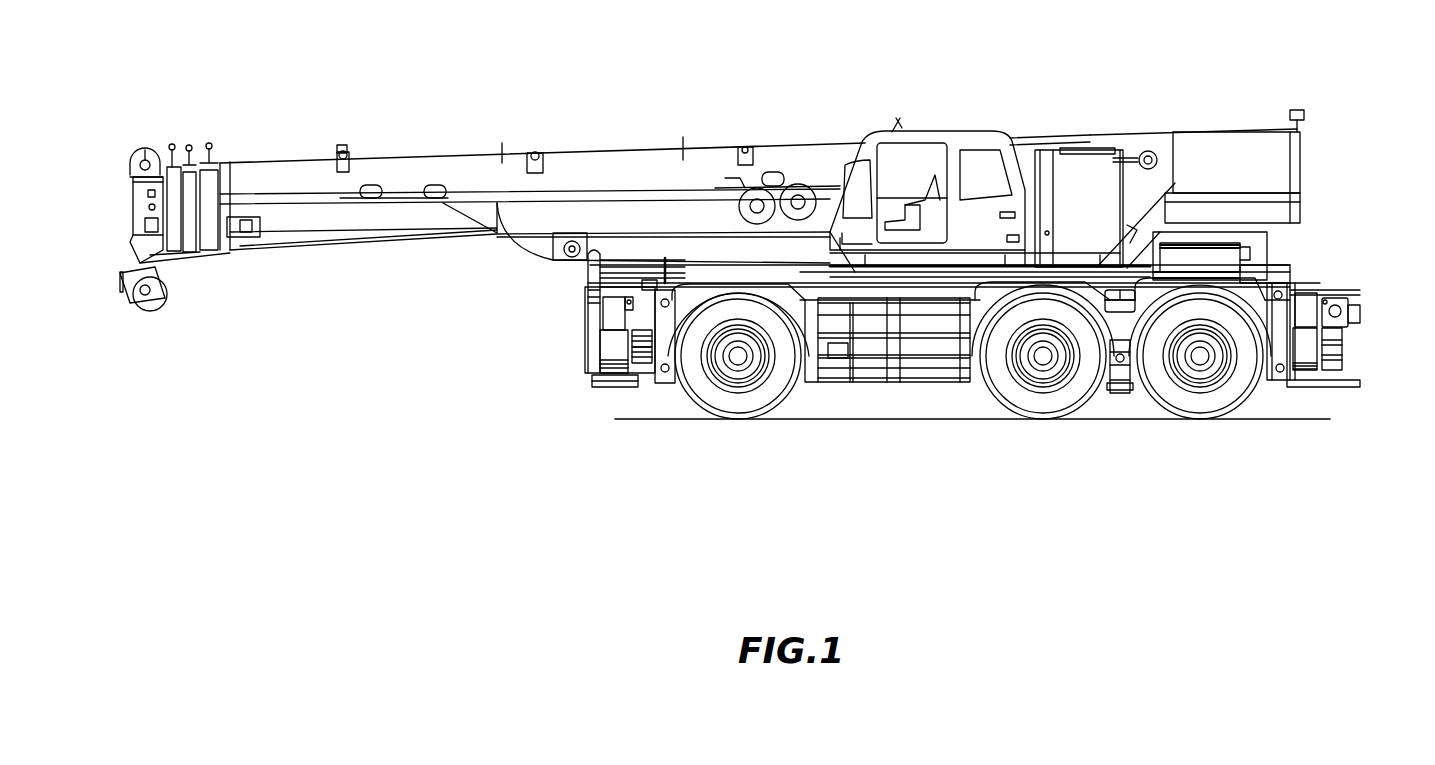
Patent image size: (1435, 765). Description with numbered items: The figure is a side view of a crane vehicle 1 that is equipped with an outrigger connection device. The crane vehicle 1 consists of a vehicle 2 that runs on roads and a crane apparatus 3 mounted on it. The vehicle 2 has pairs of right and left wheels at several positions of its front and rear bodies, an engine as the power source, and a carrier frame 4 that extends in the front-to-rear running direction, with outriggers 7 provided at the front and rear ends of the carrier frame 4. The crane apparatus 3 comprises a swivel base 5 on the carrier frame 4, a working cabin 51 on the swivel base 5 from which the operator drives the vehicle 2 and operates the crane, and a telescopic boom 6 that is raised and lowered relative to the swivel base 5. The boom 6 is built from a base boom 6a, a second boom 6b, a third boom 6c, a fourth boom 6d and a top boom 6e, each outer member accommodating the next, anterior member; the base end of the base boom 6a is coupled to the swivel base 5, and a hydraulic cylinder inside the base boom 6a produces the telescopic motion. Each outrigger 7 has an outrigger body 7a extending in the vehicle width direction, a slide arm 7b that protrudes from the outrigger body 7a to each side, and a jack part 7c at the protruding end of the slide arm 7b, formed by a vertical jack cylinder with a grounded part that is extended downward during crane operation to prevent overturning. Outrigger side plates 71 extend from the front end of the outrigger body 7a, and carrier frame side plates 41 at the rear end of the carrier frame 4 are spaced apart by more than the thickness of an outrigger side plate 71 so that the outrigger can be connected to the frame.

The crane vehicle 1 is at (718, 74).
The vehicle 2 is at (912, 398).
The crane apparatus 3 is at (1075, 98).
The carrier frame 4 is at (1113, 395).
The carrier frame side plate 41 is at (1275, 386).
The swivel base 5 is at (1166, 120).
The working cabin 51 is at (956, 116).
The telescopic boom 6 is at (633, 160).
The base boom 6a is at (246, 180).
The second boom 6b is at (201, 157).
The third boom 6c is at (192, 153).
The fourth boom 6d is at (182, 150).
The top boom 6e is at (170, 152).
The outrigger 7 is at (573, 376).
The outrigger body 7a is at (592, 285).
The slide arm 7b is at (617, 315).
The jack part 7c is at (613, 357).
The outrigger side plate 71 is at (1278, 284).